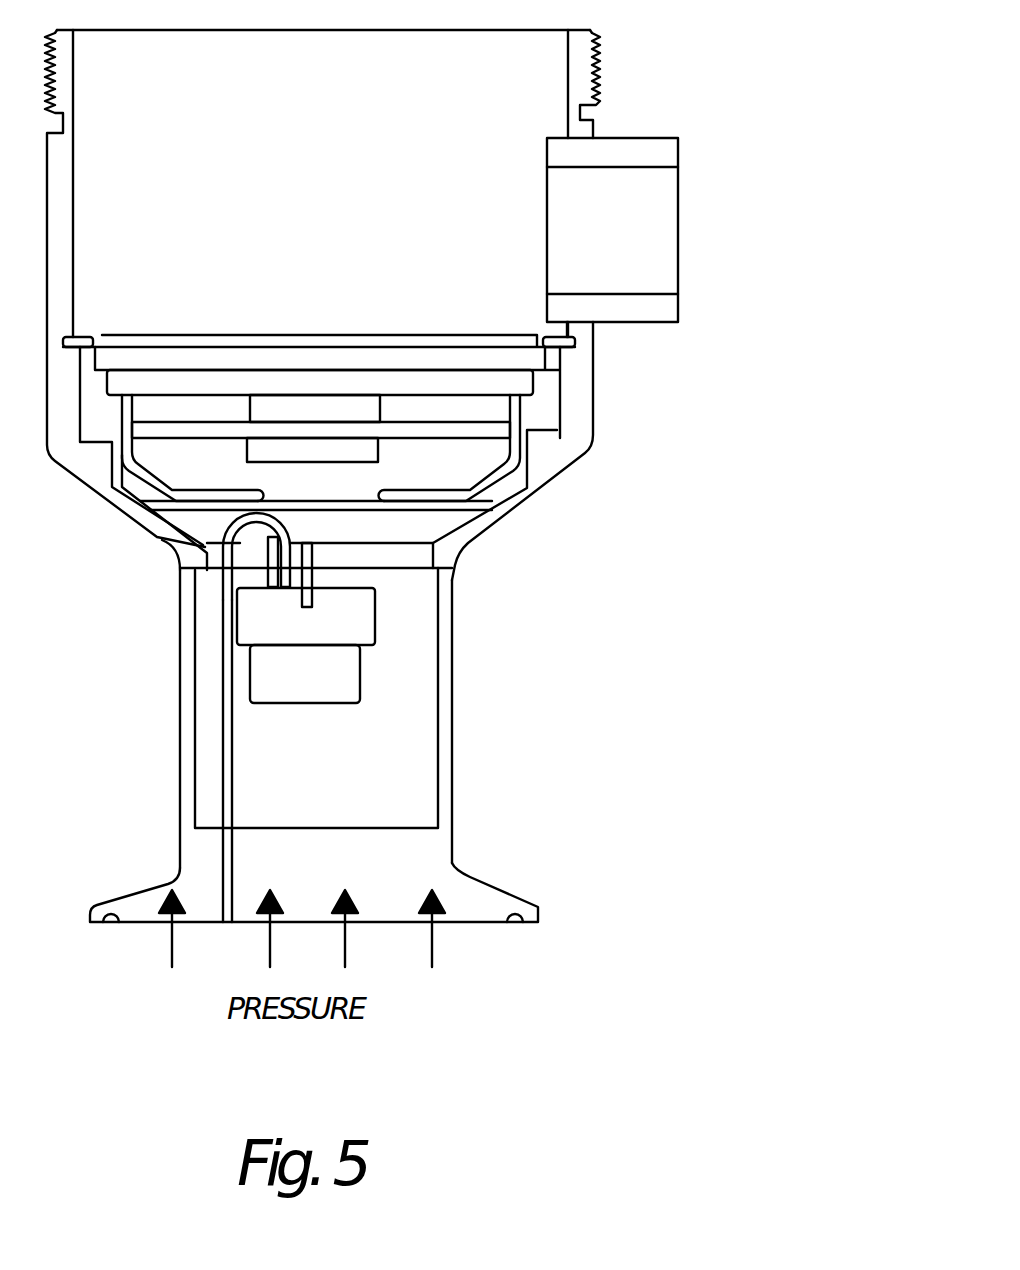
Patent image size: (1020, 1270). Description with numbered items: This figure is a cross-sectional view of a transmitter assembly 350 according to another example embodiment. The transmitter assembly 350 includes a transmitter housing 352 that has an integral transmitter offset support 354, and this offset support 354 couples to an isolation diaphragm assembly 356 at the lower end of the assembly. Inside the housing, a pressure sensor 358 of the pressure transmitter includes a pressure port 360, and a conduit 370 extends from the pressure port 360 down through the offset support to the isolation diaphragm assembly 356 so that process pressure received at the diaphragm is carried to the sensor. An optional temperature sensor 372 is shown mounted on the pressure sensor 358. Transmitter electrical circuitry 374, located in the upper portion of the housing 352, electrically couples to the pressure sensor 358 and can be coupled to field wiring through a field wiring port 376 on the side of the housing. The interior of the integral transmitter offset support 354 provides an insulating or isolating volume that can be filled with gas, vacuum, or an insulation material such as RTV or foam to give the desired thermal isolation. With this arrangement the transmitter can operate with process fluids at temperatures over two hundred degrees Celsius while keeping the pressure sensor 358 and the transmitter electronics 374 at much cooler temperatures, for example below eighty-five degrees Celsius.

The transmitter assembly 350 is at (733, 149).
The transmitter housing 352 is at (598, 60).
The integral transmitter offset support 354 is at (462, 661).
The isolation diaphragm assembly 356 is at (400, 870).
The pressure sensor 358 is at (380, 603).
The pressure port 360 is at (187, 550).
The conduit 370 is at (200, 787).
The temperature sensor 372 is at (212, 618).
The transmitter electrical circuitry 374 is at (560, 373).
The field wiring port 376 is at (677, 257).